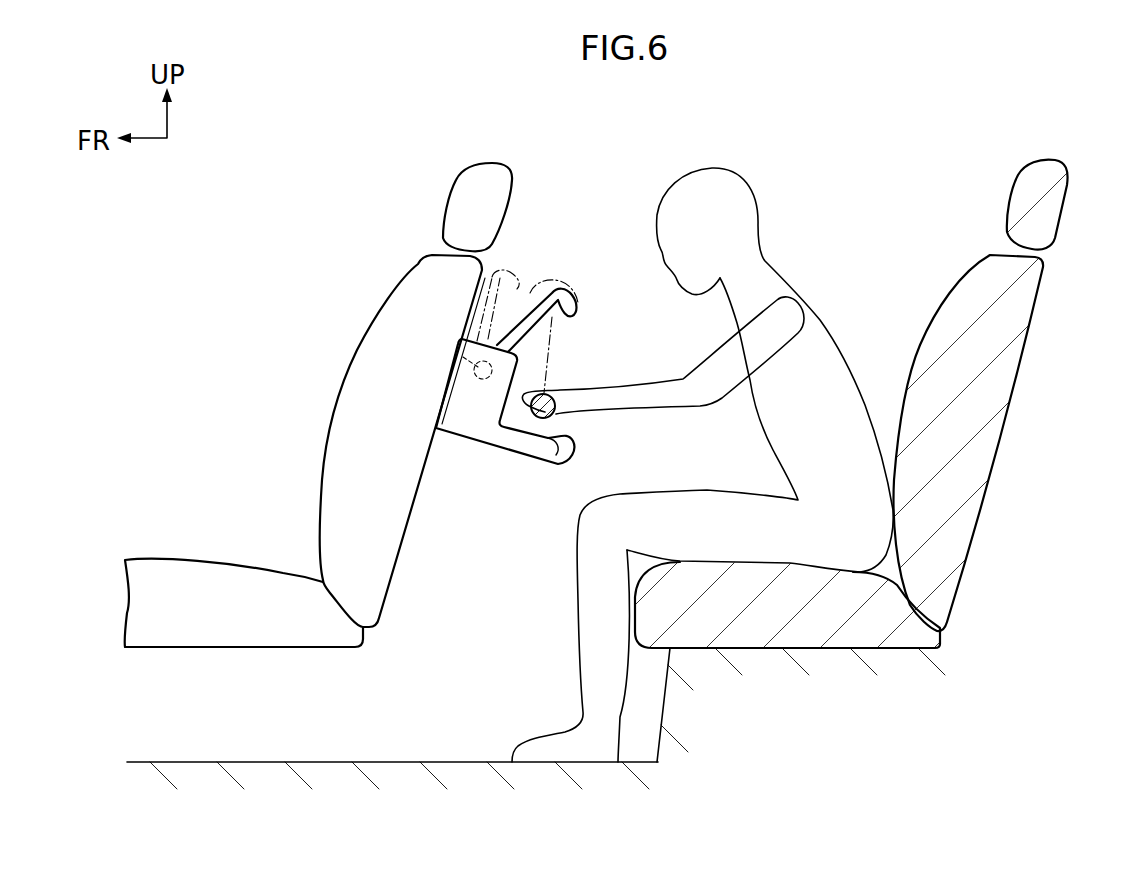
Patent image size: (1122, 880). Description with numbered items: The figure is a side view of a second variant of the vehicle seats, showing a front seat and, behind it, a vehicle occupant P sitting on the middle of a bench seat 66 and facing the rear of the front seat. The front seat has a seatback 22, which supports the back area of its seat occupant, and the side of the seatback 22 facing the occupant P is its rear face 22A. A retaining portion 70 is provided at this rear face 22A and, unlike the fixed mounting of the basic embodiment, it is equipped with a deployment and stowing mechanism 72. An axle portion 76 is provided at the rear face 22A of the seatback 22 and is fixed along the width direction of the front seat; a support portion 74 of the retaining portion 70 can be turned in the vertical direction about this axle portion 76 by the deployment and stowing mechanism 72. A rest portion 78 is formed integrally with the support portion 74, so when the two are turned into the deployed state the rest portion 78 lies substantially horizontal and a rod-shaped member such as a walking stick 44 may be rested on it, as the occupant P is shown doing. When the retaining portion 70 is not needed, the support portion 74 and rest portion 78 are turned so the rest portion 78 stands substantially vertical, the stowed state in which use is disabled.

The seatback 22 is at (393, 322).
The rear face 22A is at (393, 580).
The walking stick 44 is at (558, 407).
The bench seat 66 is at (1017, 434).
The retaining portion 70 is at (557, 258).
The deployment and stowing mechanism 72 is at (440, 361).
The support portion 74 is at (523, 412).
The axle portion 76 is at (470, 368).
The rest portion 78 is at (560, 333).
The vehicle occupant P is at (842, 328).